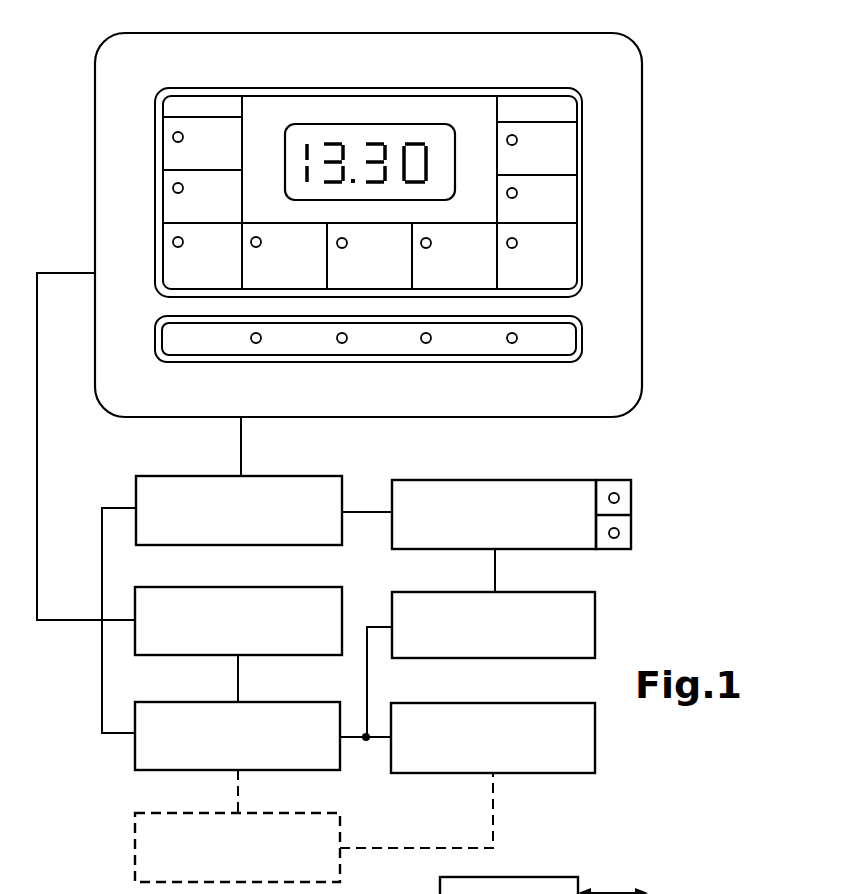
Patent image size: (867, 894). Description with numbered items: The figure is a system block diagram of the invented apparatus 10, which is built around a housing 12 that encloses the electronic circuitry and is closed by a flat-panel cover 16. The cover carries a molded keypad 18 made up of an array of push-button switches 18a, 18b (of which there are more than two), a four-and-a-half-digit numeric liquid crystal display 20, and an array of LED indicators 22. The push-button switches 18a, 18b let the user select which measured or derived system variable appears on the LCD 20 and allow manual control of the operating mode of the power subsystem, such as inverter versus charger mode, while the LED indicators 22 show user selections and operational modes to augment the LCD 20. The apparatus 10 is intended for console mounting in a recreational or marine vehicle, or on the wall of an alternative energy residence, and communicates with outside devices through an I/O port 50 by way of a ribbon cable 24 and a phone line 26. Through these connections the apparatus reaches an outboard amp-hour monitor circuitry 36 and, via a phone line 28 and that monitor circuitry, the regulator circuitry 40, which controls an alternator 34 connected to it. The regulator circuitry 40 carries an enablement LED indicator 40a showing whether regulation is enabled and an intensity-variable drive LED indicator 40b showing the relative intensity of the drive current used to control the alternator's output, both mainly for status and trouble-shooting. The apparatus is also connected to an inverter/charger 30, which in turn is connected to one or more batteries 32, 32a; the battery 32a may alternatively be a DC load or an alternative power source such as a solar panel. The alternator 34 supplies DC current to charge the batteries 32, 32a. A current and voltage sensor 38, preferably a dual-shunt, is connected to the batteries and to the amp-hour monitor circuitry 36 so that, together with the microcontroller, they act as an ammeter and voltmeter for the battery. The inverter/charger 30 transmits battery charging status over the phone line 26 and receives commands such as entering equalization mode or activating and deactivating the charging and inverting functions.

The apparatus 10 is at (664, 227).
The housing 12 is at (535, 33).
The flat-panel cover 16 is at (381, 62).
The keypad 18 is at (148, 137).
The push-button switch 18a is at (175, 205).
The push-button switch 18b is at (175, 258).
The numeric liquid crystal display 20 is at (298, 130).
The LED indicators 22 is at (183, 125).
The ribbon cable 24 is at (243, 453).
The phone line 26 is at (38, 450).
The phone line 28 is at (370, 512).
The inverter/charger 30 is at (222, 587).
The battery 32 is at (512, 703).
The battery 32a is at (135, 850).
The alternator 34 is at (515, 592).
The amp-hour monitor circuitry 36 is at (200, 476).
The current and voltage sensor 38 is at (213, 702).
The regulator circuitry 40 is at (515, 480).
The enablement LED indicator 40a is at (620, 498).
The intensity-variable drive LED indicator 40b is at (620, 533).
The I/O port 50 is at (481, 883).